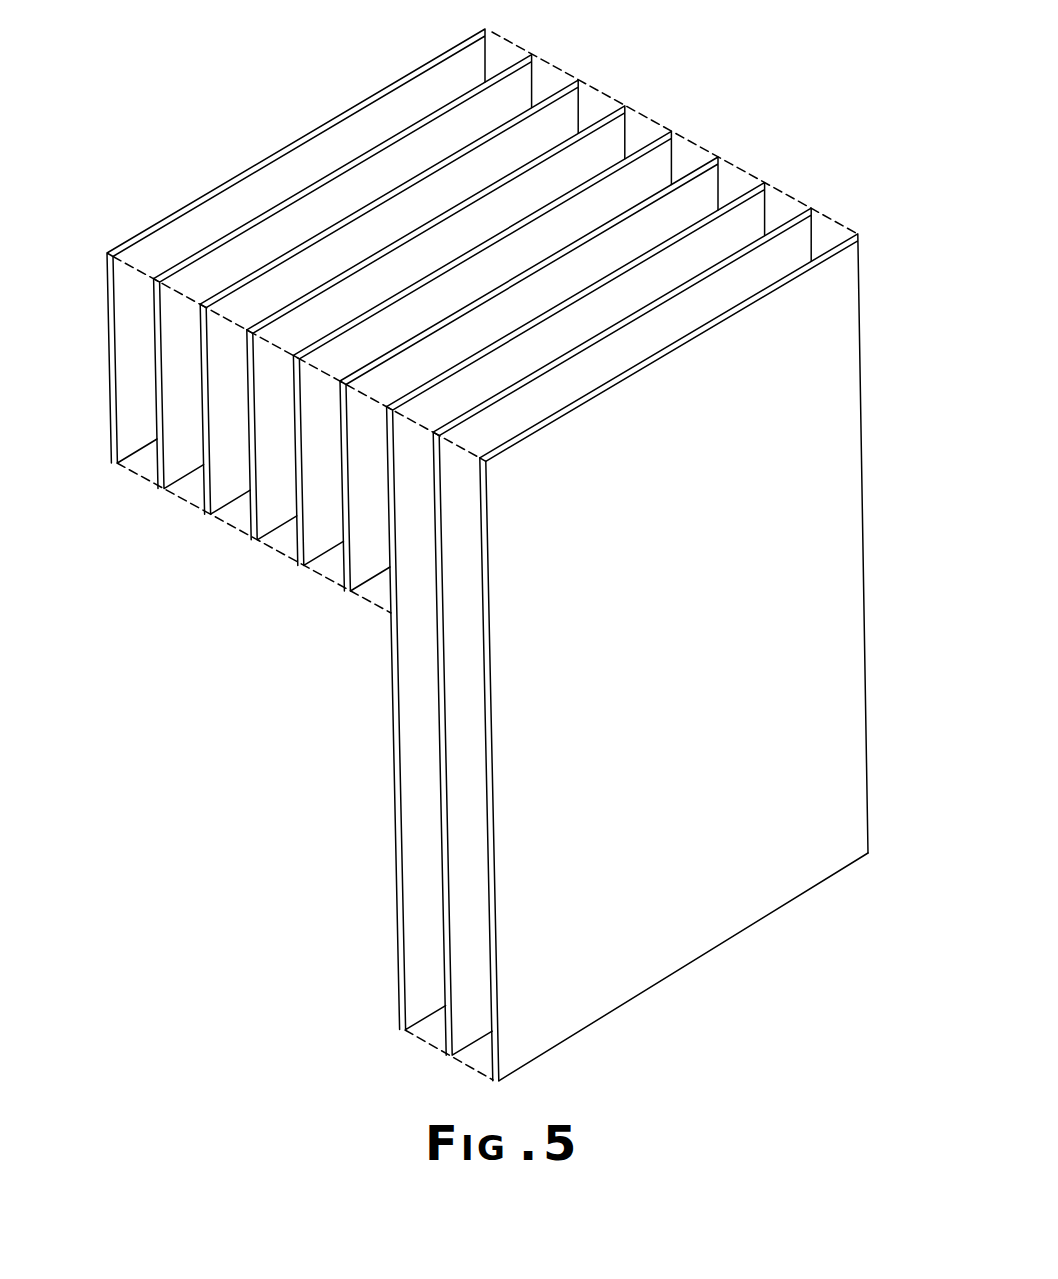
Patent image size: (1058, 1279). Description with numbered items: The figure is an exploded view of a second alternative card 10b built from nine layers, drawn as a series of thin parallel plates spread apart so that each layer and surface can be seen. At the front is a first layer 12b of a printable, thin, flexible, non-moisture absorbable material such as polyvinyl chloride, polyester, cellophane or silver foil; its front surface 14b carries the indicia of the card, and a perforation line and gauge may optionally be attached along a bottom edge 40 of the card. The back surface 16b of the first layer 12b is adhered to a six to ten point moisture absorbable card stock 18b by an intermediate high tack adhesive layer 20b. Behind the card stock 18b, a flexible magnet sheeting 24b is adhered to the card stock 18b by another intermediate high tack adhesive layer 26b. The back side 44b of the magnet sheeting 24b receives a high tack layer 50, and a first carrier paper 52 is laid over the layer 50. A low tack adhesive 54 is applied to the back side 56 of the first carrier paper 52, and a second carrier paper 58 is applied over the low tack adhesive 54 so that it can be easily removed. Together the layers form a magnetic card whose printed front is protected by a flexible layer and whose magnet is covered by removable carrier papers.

The second alternative card 10b is at (486, 561).
The first layer 12b is at (653, 676).
The front surface 14b is at (692, 657).
The back surface 16b is at (483, 818).
The card stock 18b is at (398, 1030).
The intermediate high tack adhesive layer 20b is at (447, 1056).
The flexible magnet sheeting 24b is at (298, 565).
The intermediate high tack adhesive layer 26b is at (345, 592).
The bottom edge 40 is at (710, 950).
The back side of magnet 44b is at (290, 488).
The high tack layer 50 is at (252, 538).
The first carrier paper 52 is at (205, 513).
The low tack adhesive 54 is at (157, 488).
The back side of carrier paper 56 is at (200, 440).
The second carrier paper 58 is at (112, 463).